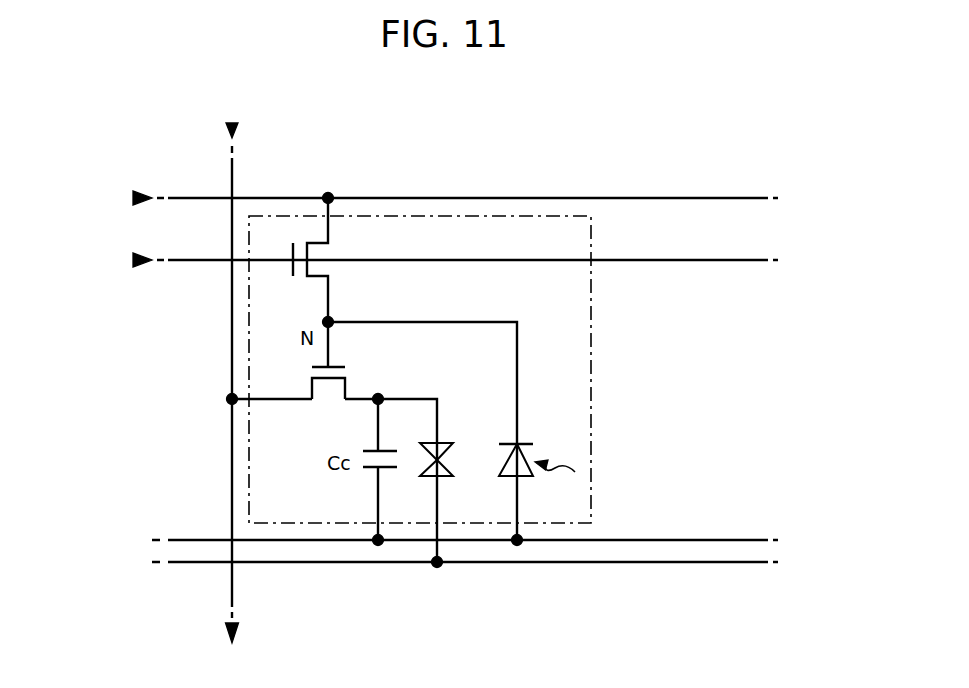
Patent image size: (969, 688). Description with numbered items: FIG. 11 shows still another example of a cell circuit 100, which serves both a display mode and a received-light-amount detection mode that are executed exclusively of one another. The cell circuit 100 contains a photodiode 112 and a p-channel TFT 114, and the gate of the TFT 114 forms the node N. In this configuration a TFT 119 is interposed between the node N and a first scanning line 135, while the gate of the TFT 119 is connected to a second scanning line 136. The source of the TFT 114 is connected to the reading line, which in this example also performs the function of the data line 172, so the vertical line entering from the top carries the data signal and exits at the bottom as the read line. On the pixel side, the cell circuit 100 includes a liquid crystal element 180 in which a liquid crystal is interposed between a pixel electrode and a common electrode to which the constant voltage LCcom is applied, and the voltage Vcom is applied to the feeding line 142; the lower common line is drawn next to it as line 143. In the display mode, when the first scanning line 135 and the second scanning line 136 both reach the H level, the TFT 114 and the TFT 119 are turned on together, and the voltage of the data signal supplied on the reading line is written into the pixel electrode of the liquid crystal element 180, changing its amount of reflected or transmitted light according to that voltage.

The cell circuit 100 is at (593, 353).
The photodiode 112 is at (502, 463).
The TFT 114 is at (321, 400).
The TFT 119 is at (315, 247).
The first scanning line 135 is at (717, 200).
The second scanning line 136 is at (717, 261).
The feeding line 142 is at (717, 540).
The LCcom line 143 is at (717, 563).
The data line 172 is at (232, 342).
The liquid crystal element 180 is at (440, 477).